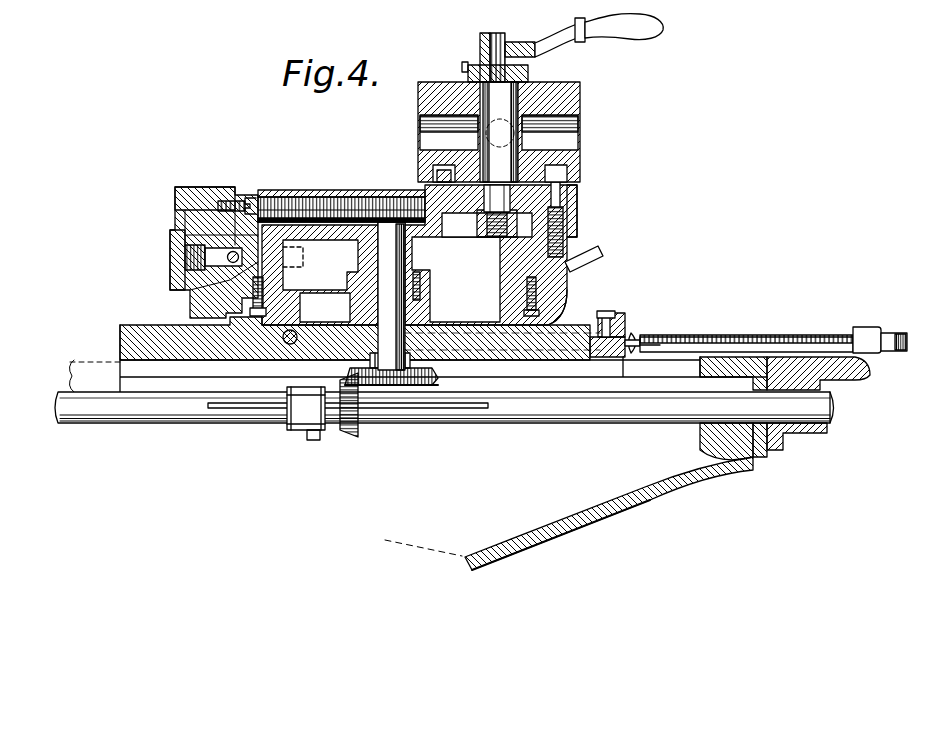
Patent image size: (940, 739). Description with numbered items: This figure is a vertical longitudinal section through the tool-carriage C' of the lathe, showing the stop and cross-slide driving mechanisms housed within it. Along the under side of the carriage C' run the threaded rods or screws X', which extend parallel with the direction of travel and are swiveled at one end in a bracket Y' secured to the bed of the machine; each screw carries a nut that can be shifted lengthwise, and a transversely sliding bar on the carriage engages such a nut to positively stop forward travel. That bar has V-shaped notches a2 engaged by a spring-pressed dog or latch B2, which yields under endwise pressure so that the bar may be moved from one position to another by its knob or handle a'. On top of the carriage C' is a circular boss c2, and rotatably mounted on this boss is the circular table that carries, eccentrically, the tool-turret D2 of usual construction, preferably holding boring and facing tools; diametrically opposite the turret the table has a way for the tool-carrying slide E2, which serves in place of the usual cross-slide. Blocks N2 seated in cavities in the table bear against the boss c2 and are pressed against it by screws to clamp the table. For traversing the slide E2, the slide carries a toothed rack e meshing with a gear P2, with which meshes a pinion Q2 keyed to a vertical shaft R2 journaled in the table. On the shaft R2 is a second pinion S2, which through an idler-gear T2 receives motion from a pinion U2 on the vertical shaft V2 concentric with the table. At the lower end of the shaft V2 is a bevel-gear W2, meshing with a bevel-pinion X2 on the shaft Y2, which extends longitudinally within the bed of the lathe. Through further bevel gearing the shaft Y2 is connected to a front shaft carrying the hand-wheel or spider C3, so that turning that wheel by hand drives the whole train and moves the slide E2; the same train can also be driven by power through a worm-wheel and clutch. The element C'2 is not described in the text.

The second pinion S2 is at (273, 197).
The vertical shaft R2 is at (308, 237).
The idler-gear T2 is at (348, 197).
The pinion U2 is at (392, 215).
The tool-turret D2 is at (578, 163).
The wall C'2 is at (597, 212).
The block N2 is at (300, 303).
The circular boss c2 is at (558, 318).
The tool-carriage C' is at (613, 310).
The spring-pressed dog or latch B2 is at (619, 323).
The notch a2 is at (628, 340).
The knob or handle a' is at (662, 324).
The threaded rod or screw X' is at (773, 327).
The bracket Y' is at (805, 408).
The shaft Y2 is at (55, 406).
The bevel-pinion X2 is at (345, 440).
The bevel-gear W2 is at (422, 390).
The pinion Q2 is at (303, 257).
The vertical shaft V2 is at (410, 256).
The tool-carrying slide E2 is at (178, 240).
The toothed rack e is at (186, 258).
The gear P2 is at (205, 270).
The hand-wheel or spider C3 is at (212, 278).